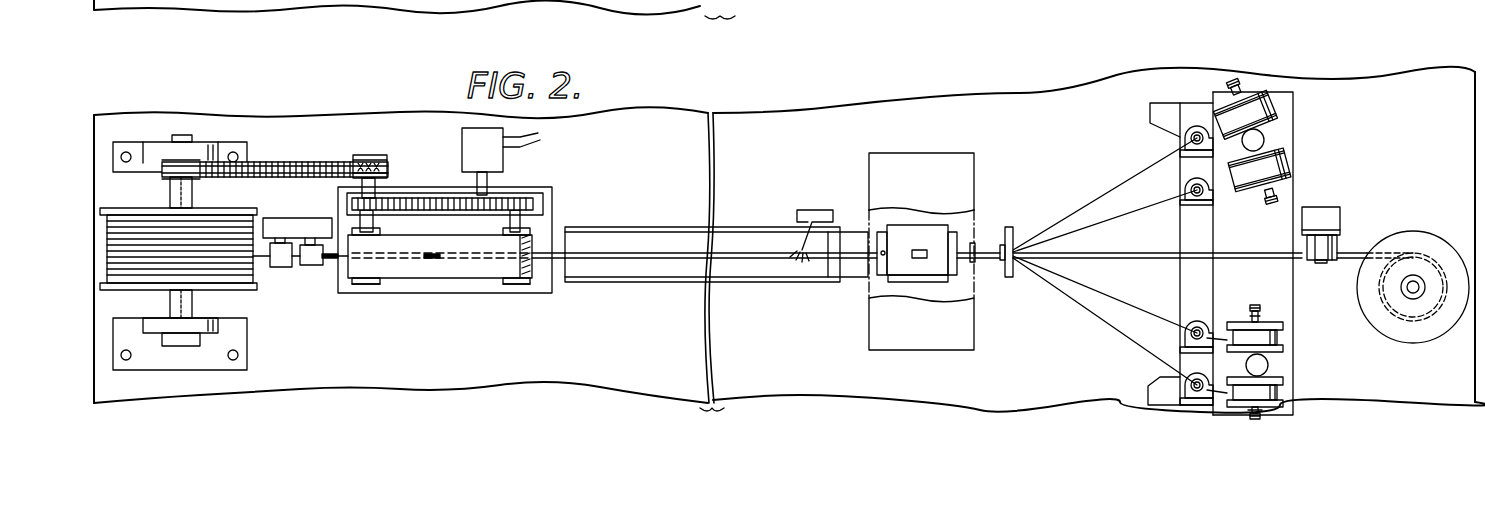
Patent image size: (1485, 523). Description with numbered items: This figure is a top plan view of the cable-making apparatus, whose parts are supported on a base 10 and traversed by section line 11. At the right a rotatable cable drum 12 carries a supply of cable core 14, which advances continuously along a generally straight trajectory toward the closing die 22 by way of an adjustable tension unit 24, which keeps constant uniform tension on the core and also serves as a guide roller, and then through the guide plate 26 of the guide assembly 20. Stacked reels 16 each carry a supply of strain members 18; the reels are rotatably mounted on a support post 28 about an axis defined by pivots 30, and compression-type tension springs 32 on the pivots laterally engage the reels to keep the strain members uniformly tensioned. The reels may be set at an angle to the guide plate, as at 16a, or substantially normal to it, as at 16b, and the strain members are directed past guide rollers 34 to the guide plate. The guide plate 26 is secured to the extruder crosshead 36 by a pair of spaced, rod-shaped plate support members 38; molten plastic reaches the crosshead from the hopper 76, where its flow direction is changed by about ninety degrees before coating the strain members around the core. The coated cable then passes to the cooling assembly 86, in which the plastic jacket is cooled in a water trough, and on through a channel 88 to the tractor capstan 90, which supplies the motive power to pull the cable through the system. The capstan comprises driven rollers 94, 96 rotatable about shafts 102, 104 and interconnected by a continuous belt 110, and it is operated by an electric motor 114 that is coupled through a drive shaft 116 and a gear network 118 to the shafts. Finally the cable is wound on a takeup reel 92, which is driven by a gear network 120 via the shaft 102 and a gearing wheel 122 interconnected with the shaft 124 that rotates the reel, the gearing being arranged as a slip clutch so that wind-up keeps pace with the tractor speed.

The base 10 is at (807, 121).
The section line 11 is at (330, 265).
The cable drum 12 is at (1398, 334).
The cable core 14 is at (1357, 246).
The reels 16 is at (1277, 108).
The reel positioned at an angle 16a is at (1280, 115).
The reel extending normal to the guide plate 16b is at (1290, 388).
The strain members 18 is at (1096, 200).
The guide assembly 20 is at (965, 239).
The closing die 22 is at (978, 243).
The tension unit 24 is at (1325, 263).
The guide plate 26 is at (1008, 278).
The support post 28 is at (1262, 140).
The pivots 30 is at (1240, 83).
The tension springs 32 is at (1223, 97).
The guide rollers 34 is at (1185, 158).
The extruder crosshead 36 is at (920, 284).
The plate support members 38 is at (995, 258).
The hopper 76 is at (925, 160).
The cooling assembly 86 is at (771, 284).
The channel 88 is at (742, 227).
The tractor capstan 90 is at (493, 270).
The takeup reel 92 is at (237, 290).
The driven roller 94 is at (377, 284).
The driven roller 96 is at (522, 281).
The shaft 102 is at (363, 155).
The shaft 104 is at (517, 223).
The belt 110 is at (472, 267).
The electric motor 114 is at (490, 150).
The drive shaft 116 is at (487, 182).
The gear network 118 is at (408, 196).
The gear network 120 is at (281, 161).
The gearing wheel 122 is at (175, 163).
The shaft 124 is at (178, 193).